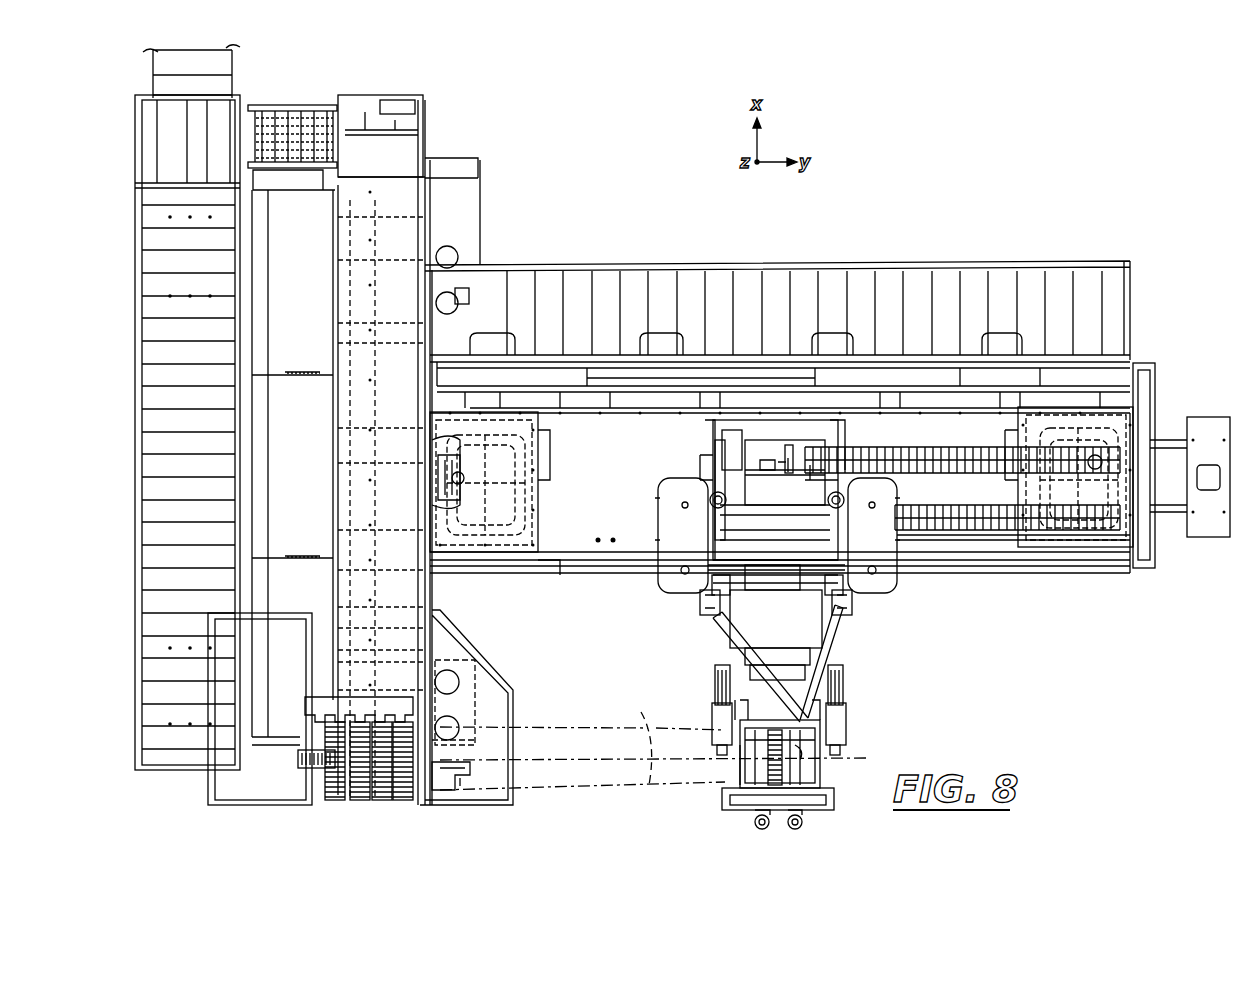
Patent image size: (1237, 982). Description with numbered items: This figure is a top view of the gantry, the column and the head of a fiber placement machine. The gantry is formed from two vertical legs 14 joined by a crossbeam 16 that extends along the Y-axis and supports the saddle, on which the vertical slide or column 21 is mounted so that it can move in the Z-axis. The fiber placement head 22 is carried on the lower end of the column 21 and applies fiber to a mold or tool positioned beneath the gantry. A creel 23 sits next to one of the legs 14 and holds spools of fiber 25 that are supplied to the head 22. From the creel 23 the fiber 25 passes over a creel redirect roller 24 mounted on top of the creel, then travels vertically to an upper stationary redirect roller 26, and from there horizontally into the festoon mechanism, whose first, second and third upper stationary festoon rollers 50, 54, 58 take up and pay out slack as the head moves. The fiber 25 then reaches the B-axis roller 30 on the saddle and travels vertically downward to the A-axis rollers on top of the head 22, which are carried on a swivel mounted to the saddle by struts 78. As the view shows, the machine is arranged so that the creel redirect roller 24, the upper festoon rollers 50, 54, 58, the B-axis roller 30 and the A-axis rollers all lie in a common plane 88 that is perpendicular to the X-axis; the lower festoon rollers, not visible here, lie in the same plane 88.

The creel 23 is at (282, 515).
The crossbeam 16 is at (614, 479).
The vertical legs 14 is at (537, 545).
The column 21 is at (808, 625).
The struts 78 is at (728, 645).
The fiber 25 is at (632, 742).
The common plane 88 is at (598, 758).
The creel redirect roller 24 is at (313, 768).
The upper stationary redirect roller 26 is at (333, 800).
The first upper stationary festoon roller 50 is at (360, 800).
The second upper stationary festoon roller 54 is at (382, 800).
The third upper stationary festoon roller 58 is at (403, 800).
The B-axis roller 30 is at (770, 768).
The fiber placement head 22 is at (818, 805).